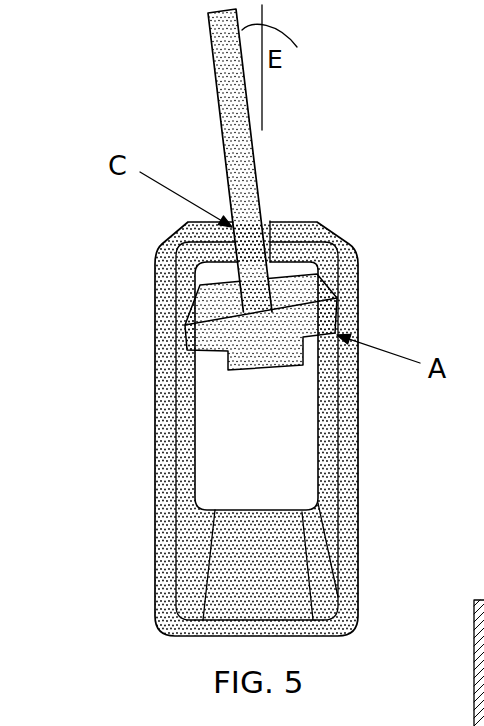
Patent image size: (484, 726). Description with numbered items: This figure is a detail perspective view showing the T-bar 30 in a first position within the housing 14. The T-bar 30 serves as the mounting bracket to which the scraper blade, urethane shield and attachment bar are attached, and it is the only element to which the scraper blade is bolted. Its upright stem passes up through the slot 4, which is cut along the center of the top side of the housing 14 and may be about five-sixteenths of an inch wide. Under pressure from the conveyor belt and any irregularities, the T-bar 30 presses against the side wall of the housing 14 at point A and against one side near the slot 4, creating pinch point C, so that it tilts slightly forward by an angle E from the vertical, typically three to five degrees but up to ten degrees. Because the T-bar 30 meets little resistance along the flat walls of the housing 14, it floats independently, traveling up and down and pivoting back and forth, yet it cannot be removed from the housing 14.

The slot 4 is at (278, 215).
The housing 14 is at (142, 408).
The T-bar 30 is at (258, 379).